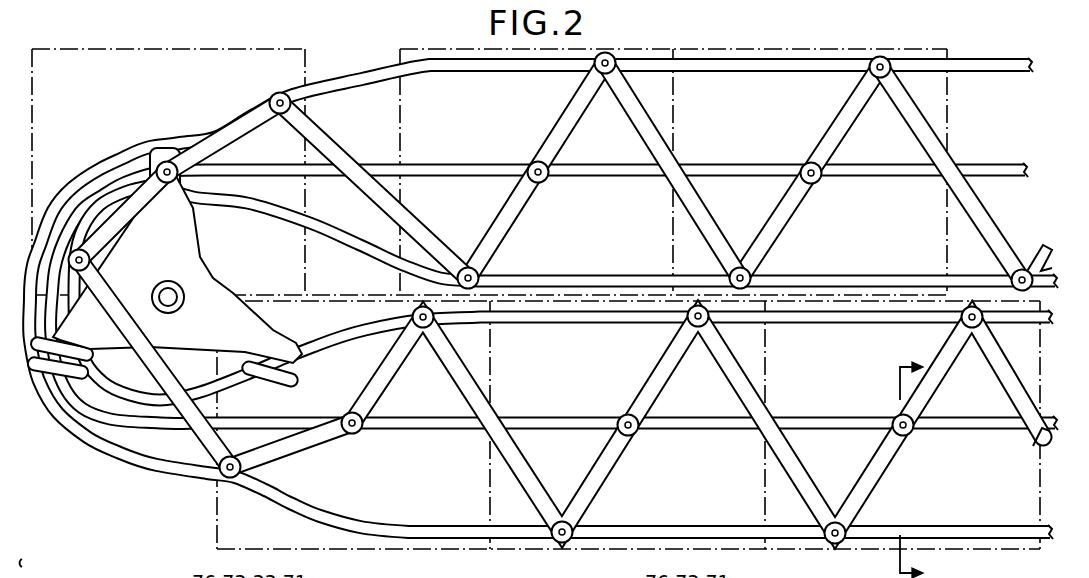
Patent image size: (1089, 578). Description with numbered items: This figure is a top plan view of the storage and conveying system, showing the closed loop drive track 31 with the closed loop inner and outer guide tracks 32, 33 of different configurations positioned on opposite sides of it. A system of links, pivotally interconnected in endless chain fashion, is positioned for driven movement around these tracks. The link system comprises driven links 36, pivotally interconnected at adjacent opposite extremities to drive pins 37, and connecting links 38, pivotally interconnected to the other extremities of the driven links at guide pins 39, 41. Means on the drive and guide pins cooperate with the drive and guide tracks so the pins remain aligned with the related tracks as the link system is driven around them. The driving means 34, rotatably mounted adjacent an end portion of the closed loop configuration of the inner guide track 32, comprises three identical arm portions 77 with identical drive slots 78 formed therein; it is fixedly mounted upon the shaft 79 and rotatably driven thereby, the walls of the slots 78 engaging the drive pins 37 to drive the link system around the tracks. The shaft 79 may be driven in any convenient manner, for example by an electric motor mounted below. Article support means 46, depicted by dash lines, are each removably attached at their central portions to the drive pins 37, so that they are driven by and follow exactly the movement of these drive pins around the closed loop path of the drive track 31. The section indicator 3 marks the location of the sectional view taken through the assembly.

The section line for FIG. 3 is at (911, 460).
The drive track 31 is at (535, 418).
The inner guide track 32 is at (571, 318).
The outer guide track 33 is at (386, 527).
The driving element 34 is at (164, 245).
The driven link 36 is at (251, 117).
The drive pin 37 is at (147, 152).
The connecting link 38 is at (327, 143).
The guide pin 39 is at (283, 93).
The guide pin 41 is at (90, 260).
The article support means 46 is at (95, 50).
The arm portion 77 is at (192, 243).
The drive slot 78 is at (163, 146).
The shaft 79 is at (176, 300).